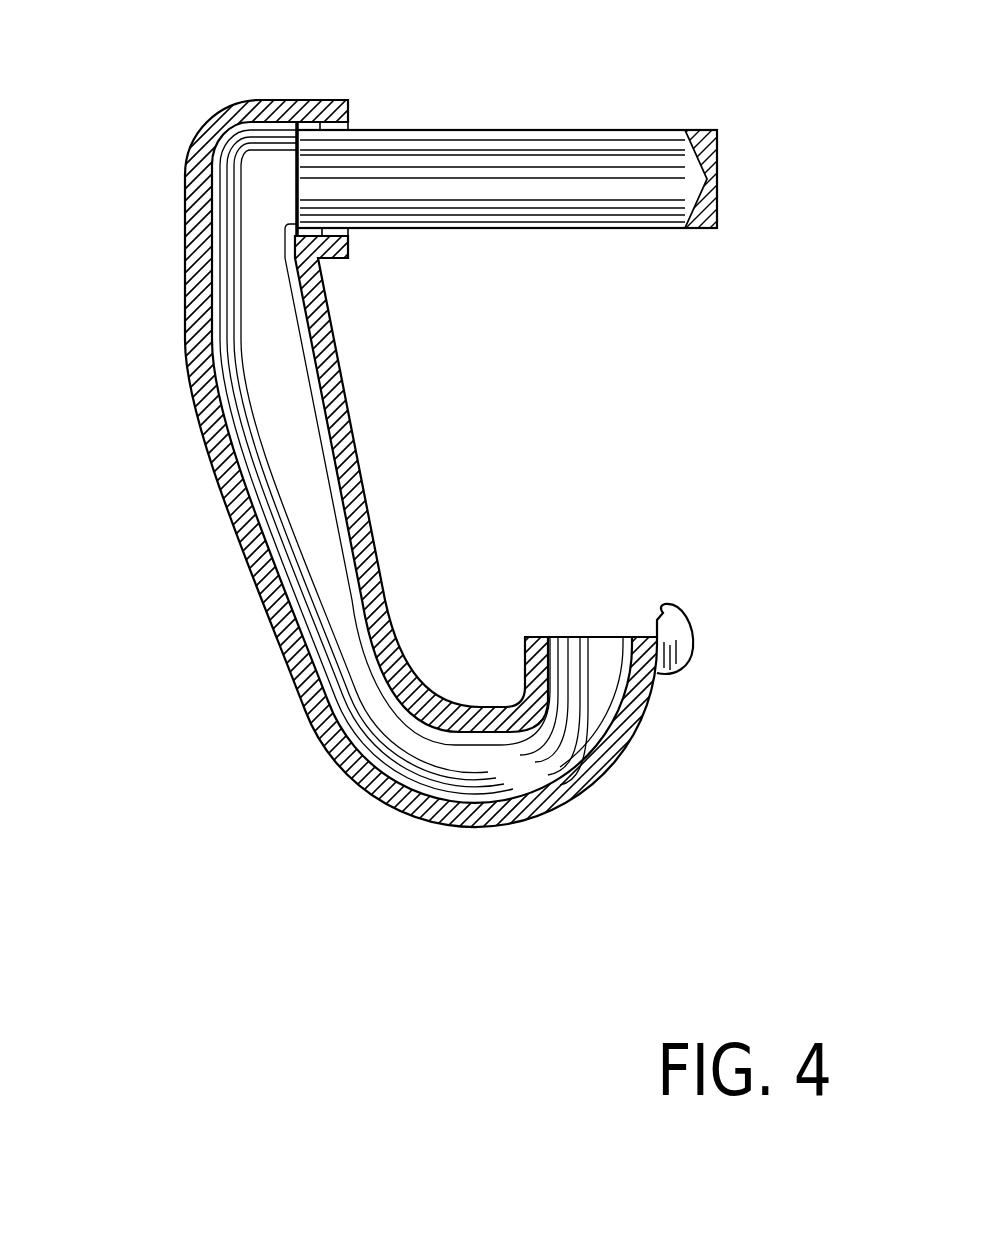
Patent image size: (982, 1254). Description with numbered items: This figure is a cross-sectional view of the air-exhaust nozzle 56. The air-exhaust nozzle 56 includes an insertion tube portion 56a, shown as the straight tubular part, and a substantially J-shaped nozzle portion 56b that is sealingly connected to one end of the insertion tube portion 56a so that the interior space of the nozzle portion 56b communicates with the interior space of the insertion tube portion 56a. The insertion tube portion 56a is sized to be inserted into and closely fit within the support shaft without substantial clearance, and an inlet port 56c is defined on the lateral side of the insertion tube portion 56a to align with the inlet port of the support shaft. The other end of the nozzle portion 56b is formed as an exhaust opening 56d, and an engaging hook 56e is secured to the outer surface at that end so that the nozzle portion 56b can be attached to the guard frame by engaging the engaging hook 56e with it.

The air-exhaust nozzle 56 is at (200, 510).
The insertion tube portion 56a is at (555, 228).
The nozzle portion 56b is at (258, 613).
The inlet port 56c is at (538, 128).
The exhaust opening 56d is at (622, 690).
The engaging hook 56e is at (692, 640).